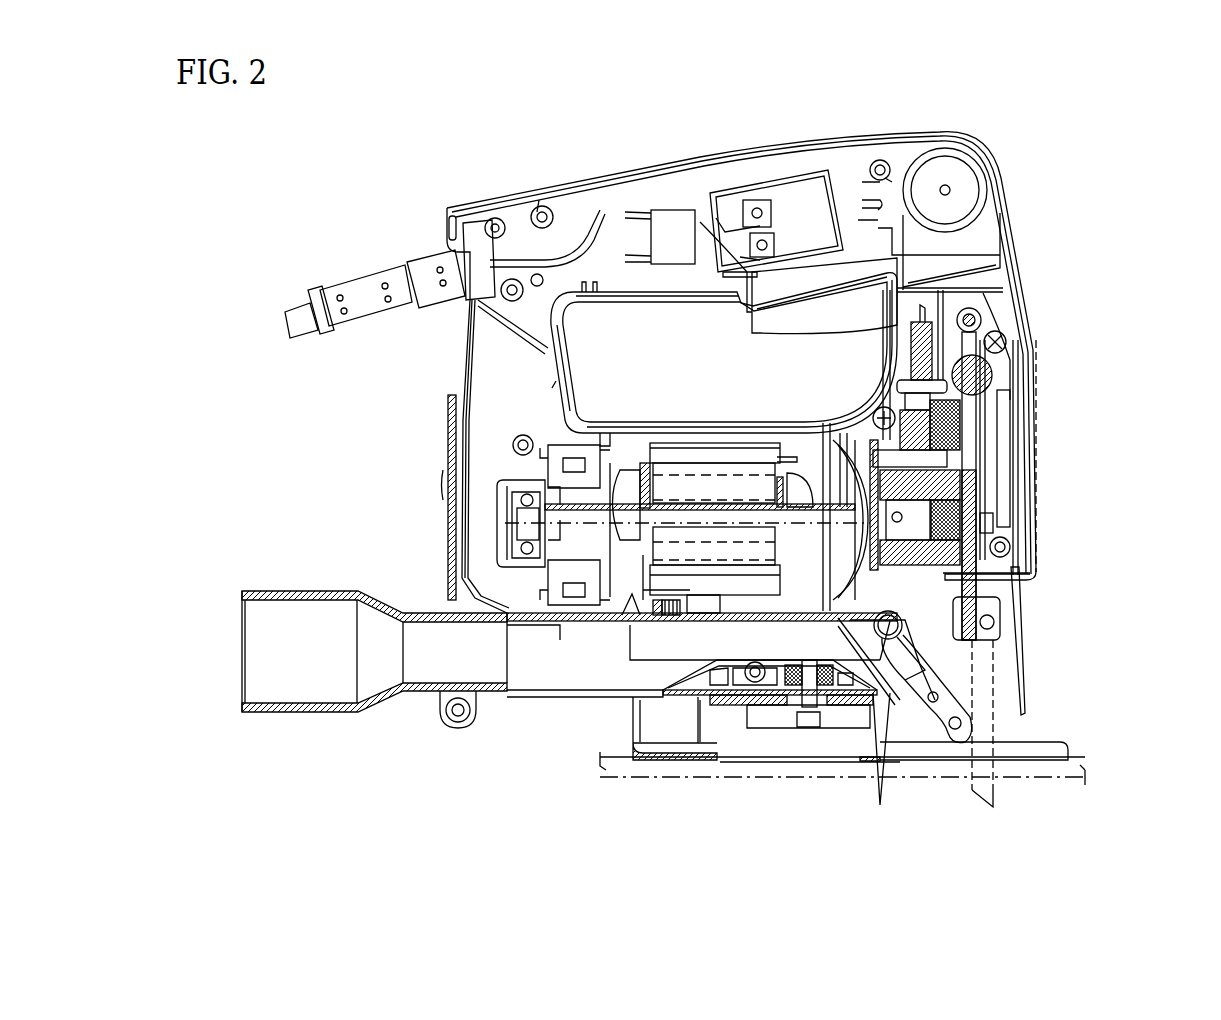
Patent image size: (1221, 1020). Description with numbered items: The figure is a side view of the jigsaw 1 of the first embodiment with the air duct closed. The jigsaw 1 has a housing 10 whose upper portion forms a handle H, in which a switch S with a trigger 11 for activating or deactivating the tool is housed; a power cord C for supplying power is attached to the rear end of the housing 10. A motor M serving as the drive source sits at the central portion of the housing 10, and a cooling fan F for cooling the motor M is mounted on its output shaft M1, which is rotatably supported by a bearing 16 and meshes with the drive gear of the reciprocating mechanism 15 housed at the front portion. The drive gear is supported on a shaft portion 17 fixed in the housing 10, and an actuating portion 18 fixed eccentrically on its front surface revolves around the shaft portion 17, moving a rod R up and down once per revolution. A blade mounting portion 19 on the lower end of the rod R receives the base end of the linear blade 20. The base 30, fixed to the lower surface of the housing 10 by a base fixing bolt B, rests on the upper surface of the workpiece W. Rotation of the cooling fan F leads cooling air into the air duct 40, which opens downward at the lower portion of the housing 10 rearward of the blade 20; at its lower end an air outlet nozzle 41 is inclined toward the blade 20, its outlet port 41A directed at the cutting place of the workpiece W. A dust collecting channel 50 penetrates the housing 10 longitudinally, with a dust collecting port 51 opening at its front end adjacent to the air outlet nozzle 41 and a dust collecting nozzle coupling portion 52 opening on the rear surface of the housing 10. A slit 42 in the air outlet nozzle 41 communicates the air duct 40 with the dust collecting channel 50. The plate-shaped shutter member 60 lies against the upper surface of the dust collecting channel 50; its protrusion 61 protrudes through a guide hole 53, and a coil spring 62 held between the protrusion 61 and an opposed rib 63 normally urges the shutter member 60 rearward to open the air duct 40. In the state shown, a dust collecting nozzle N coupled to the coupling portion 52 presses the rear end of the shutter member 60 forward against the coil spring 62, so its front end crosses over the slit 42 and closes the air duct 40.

The jigsaw 1 is at (1021, 104).
The handle H is at (718, 150).
The switch S is at (790, 210).
The power cord C is at (345, 287).
The housing 10 is at (465, 337).
The trigger 11 is at (782, 338).
The motor M is at (637, 452).
The cooling fan F is at (832, 415).
The rod R is at (970, 405).
The shaft portion 17 is at (975, 430).
The actuating portion 18 is at (975, 450).
The reciprocating mechanism 15 is at (955, 500).
The output shaft M1 is at (1028, 568).
The bearing 16 is at (990, 592).
The blade mounting portion 19 is at (1000, 630).
The air duct 40 is at (915, 627).
The outlet port 41A is at (900, 660).
The air outlet nozzle 41 is at (882, 622).
The blade 20 is at (1010, 725).
The base 30 is at (1085, 750).
The workpiece W is at (1078, 770).
The dust collecting nozzle N is at (305, 712).
The dust collecting nozzle coupling portion 52 is at (492, 700).
The shutter member 60 is at (540, 690).
The dust collecting channel 50 is at (558, 680).
The guide hole 53 is at (640, 618).
The dust collecting port 51 is at (830, 612).
The slit 42 is at (805, 665).
The base fixing bolt B is at (810, 700).
The protrusion 61 is at (640, 630).
The coil spring 62 is at (675, 625).
The rib 63 is at (708, 620).